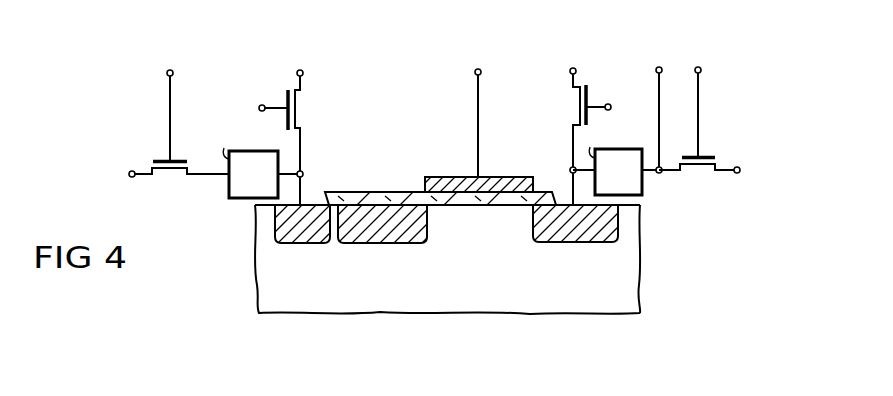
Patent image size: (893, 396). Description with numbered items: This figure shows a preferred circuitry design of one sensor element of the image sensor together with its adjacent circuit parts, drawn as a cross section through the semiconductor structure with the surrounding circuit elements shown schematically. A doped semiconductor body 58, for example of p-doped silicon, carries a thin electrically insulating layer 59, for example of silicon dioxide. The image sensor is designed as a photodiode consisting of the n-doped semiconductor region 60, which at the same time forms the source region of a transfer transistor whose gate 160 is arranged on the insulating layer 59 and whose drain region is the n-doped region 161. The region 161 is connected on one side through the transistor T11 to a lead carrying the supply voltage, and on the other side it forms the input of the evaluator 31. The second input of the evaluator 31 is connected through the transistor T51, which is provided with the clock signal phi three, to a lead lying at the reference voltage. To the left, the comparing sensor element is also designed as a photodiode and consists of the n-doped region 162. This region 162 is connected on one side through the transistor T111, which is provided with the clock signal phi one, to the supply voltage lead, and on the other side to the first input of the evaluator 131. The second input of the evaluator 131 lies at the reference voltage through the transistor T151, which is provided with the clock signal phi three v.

The doped semiconductor body 58 is at (627, 265).
The electrically insulating layer 59 is at (379, 193).
The n-doped semiconductor region 60 is at (391, 236).
The gate 160 is at (448, 178).
The drain region 161 is at (577, 234).
The n-doped region 162 is at (305, 236).
The evaluator 131 is at (251, 164).
The evaluator 31 is at (616, 162).
The transistor T151 is at (154, 122).
The transistor T111 is at (285, 122).
The transistor T11 is at (592, 122).
The transistor T51 is at (708, 121).